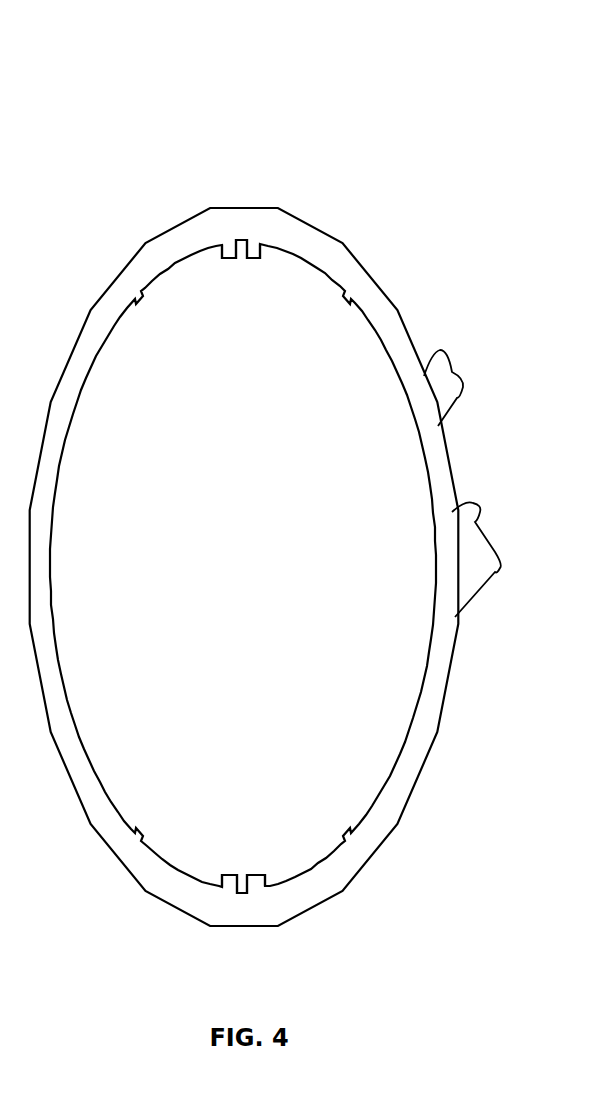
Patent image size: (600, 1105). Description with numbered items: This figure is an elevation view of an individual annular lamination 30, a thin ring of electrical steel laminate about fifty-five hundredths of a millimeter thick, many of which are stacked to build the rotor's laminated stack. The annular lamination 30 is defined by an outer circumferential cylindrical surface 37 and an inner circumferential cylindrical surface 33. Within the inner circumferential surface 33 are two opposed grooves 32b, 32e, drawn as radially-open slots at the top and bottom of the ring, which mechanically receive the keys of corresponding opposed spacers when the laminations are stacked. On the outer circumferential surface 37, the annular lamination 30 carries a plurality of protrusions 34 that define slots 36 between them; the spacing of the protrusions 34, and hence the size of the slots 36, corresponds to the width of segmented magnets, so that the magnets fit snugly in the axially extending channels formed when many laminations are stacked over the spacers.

The annular lamination 30 is at (267, 106).
The groove 32b is at (267, 260).
The groove 32e is at (250, 874).
The inner circumferential cylindrical surface 33 is at (51, 578).
The protrusion 34 is at (488, 523).
The slot 36 is at (452, 372).
The outer circumferential cylindrical surface 37 is at (347, 250).